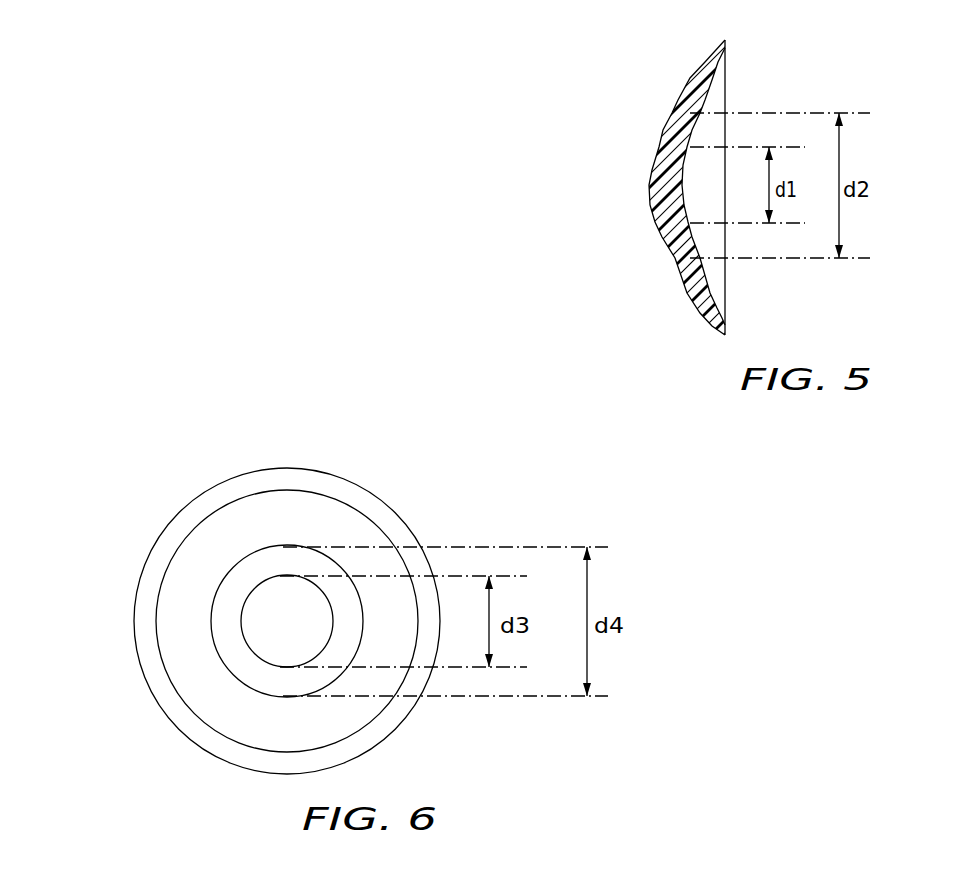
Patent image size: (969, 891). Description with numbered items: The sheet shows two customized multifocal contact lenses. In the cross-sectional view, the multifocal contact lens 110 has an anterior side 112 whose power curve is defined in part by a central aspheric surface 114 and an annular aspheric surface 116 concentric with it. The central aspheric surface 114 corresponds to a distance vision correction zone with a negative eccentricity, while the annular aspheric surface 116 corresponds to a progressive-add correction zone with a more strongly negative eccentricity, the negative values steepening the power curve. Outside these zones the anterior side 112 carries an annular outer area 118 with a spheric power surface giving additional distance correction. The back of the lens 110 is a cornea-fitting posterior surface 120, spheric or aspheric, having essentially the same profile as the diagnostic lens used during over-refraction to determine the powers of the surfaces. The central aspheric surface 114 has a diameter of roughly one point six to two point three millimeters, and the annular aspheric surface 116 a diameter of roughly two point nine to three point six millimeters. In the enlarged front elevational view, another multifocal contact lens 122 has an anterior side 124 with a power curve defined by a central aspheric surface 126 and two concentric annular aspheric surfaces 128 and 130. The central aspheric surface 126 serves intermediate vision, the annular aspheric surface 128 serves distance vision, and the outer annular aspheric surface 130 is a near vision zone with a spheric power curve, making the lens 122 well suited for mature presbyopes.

In FIG. 5, the multifocal contact lens 110 is at (808, 84).
In FIG. 5, the anterior side 112 is at (634, 128).
In FIG. 5, the central aspheric surface 114 is at (652, 190).
In FIG. 5, the annular aspheric surface 116 is at (662, 237).
In FIG. 5, the annular outer area 118 is at (680, 283).
In FIG. 5, the posterior surface 120 is at (710, 95).
In FIG. 6, the multifocal contact lens 122 is at (130, 732).
In FIG. 6, the anterior side 124 is at (162, 634).
In FIG. 6, the central aspheric surface 126 is at (265, 623).
In FIG. 6, the annular aspheric surface 128 is at (223, 602).
In FIG. 6, the annular aspheric surface 130 is at (263, 510).